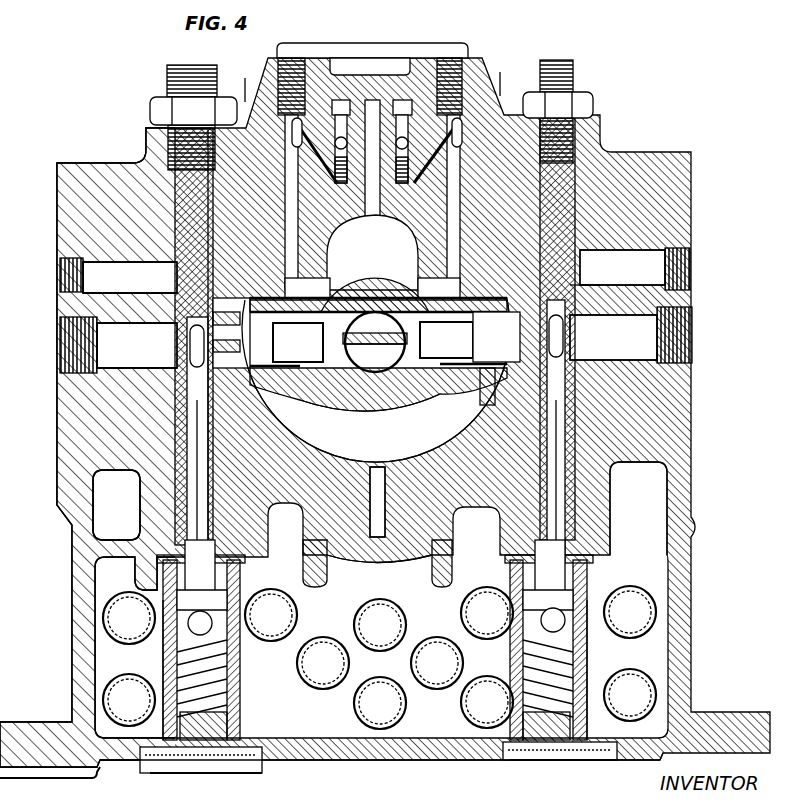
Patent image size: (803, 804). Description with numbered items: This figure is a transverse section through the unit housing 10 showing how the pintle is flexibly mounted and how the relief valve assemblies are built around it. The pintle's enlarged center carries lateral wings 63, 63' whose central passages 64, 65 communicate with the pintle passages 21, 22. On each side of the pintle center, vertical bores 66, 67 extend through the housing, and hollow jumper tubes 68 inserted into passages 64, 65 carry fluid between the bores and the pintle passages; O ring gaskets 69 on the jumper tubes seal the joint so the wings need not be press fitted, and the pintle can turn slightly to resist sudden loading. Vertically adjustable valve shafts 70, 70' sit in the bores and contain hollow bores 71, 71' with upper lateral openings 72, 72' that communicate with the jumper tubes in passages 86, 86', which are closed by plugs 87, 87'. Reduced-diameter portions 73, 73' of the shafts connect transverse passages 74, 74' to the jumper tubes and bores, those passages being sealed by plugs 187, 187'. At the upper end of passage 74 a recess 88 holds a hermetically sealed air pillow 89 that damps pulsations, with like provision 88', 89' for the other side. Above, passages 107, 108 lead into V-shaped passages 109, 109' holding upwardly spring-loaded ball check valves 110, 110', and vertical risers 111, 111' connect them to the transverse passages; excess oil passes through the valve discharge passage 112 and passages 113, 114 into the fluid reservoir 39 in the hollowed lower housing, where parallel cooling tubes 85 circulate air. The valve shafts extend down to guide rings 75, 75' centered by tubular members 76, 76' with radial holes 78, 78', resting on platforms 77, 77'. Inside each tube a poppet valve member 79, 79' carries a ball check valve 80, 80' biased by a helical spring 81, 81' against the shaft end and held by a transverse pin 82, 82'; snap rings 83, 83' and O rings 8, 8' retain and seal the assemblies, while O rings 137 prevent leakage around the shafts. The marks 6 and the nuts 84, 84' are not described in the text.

The section line 6 is at (366, 88).
The O ring 8 is at (69, 780).
The O ring 8' is at (565, 772).
The unit housing 10 is at (462, 428).
The pintle passage 21 is at (375, 328).
The pintle passage 22 is at (375, 356).
The fluid reservoir 39 is at (354, 738).
The lateral wing 63 is at (378, 325).
The lateral wing 63' is at (446, 340).
The central passage 64 is at (462, 385).
The central passage 65 is at (300, 380).
The vertical bore 66 is at (560, 446).
The vertical bore 67 is at (213, 428).
The hollow jumper tube 68 is at (285, 285).
The O ring gasket 69 is at (490, 390).
The valve shaft 70 is at (175, 439).
The valve shaft 70' is at (582, 431).
The hollow bore 71 is at (225, 480).
The hollow bore 71' is at (586, 480).
The upper lateral opening 72 is at (191, 333).
The upper lateral opening 72' is at (578, 336).
The portion of reduced diameter 73 is at (159, 305).
The portion of reduced diameter 73' is at (590, 297).
The transverse passage 74 is at (130, 264).
The transverse passage 74' is at (572, 257).
The guide ring 75 is at (342, 540).
The guide ring 75' is at (426, 526).
The tubular member 76 is at (144, 670).
The tubular member 76' is at (542, 670).
The ported platform 77 is at (201, 770).
The platform 77' is at (560, 767).
The radial hole 78 is at (172, 647).
The radial hole 78' is at (527, 647).
The poppet valve member 79 is at (220, 678).
The poppet valve member 79' is at (578, 678).
The ball check valve 80 is at (308, 619).
The ball check valve 80' is at (570, 626).
The helical spring 81 is at (182, 700).
The helical spring 81' is at (522, 713).
The transverse pin 82 is at (202, 587).
The transverse pin 82' is at (548, 586).
The snap ring 83 is at (207, 781).
The snap ring 83' is at (558, 776).
The stud nut 84 is at (178, 305).
The stud nut 84' is at (574, 295).
The cooling tube 85 is at (326, 638).
The passage 86 is at (137, 331).
The passage 86' is at (613, 339).
The plug 87 is at (56, 345).
The plug 87' is at (694, 335).
The recess 88 is at (286, 154).
The lever 88' is at (455, 154).
The air pillow 89 is at (271, 157).
The pivot 89' is at (475, 132).
The passage 107 is at (341, 100).
The passage 108 is at (406, 100).
The V-shaped passage 109 is at (336, 188).
The V-shaped passage 109' is at (429, 179).
The ball check valve 110 is at (320, 170).
The ball check valve 110' is at (429, 156).
The vertical riser 111 is at (268, 202).
The vertical riser 111' is at (479, 202).
The valve discharge passage 112 is at (372, 100).
The passage 113 is at (380, 207).
The passage 114 is at (378, 470).
The O ring 137 is at (173, 216).
The plug 187 is at (43, 277).
The plug 187' is at (706, 269).